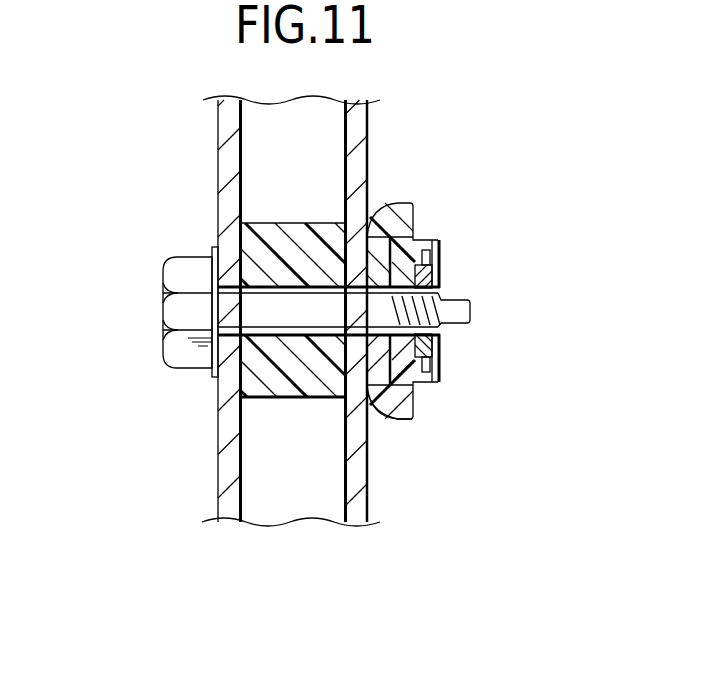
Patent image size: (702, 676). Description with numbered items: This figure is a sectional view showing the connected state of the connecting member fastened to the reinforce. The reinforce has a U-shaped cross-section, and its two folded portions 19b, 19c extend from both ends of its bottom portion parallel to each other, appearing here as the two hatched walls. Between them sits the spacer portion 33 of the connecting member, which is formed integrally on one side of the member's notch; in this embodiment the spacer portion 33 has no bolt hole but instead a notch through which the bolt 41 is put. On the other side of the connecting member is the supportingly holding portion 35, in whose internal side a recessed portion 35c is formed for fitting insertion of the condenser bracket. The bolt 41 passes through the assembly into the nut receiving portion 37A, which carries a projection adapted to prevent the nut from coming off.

The folded portion 19b is at (232, 157).
The folded portion 19c is at (357, 118).
The spacer portion 33 is at (278, 390).
The supportingly holding portion 35 is at (407, 222).
The recessed portion 35c is at (415, 403).
The nut receiving portion 37A is at (452, 340).
The bolt 41 is at (173, 307).